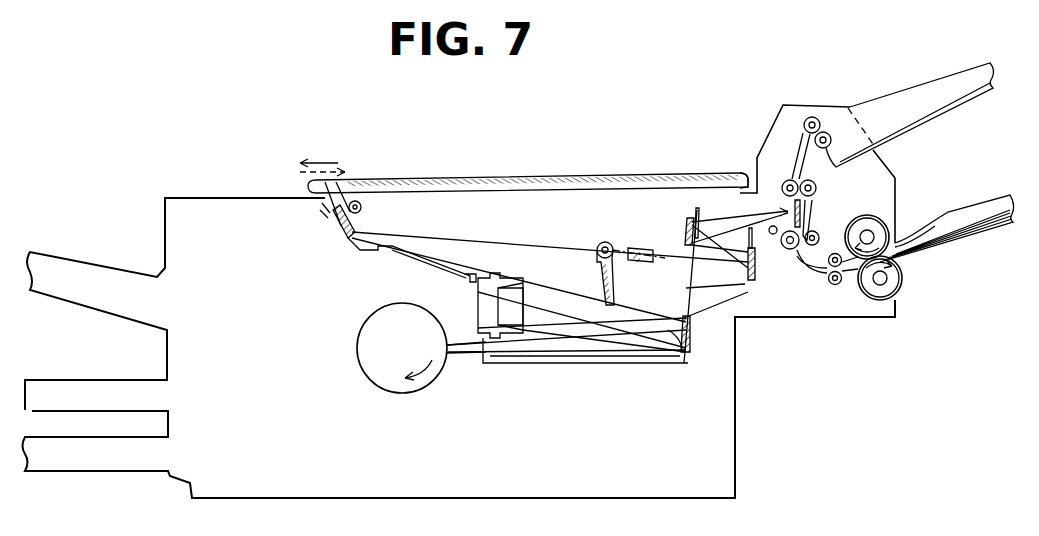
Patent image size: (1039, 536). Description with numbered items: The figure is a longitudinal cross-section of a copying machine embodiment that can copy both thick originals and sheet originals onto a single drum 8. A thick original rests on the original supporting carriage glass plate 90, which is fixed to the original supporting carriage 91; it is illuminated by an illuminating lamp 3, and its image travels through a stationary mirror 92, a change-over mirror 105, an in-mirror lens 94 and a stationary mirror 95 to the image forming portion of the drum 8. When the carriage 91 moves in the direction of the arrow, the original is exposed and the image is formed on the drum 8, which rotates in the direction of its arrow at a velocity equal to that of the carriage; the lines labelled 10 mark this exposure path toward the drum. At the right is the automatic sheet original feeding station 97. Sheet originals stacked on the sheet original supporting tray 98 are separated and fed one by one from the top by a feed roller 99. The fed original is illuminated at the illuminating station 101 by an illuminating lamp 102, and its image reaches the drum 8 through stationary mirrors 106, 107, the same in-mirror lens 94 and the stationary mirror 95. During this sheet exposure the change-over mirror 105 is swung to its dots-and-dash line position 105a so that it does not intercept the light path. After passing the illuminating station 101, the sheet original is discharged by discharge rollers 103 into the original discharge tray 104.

The illuminating lamp 3 is at (357, 200).
The drum 8 is at (358, 366).
The exposure slit 10 is at (475, 380).
The original supporting carriage glass plate 90 is at (561, 176).
The original supporting carriage 91 is at (730, 172).
The stationary mirror 92 is at (340, 225).
The in-mirror lens 94 is at (508, 285).
The stationary mirror 95 is at (690, 352).
The automatic sheet original feeding station 97 is at (916, 289).
The sheet original supporting tray 98 is at (992, 232).
The feed roller 99 is at (866, 214).
The illuminating station 101 is at (780, 200).
The illuminating lamp 102 is at (775, 242).
The discharge rollers 103 is at (808, 115).
The original discharge tray 104 is at (955, 100).
The change-over mirror 105 is at (598, 272).
The dots-and-dash line position 105a is at (640, 244).
The stationary mirror 106 is at (700, 220).
The stationary mirror 107 is at (748, 272).